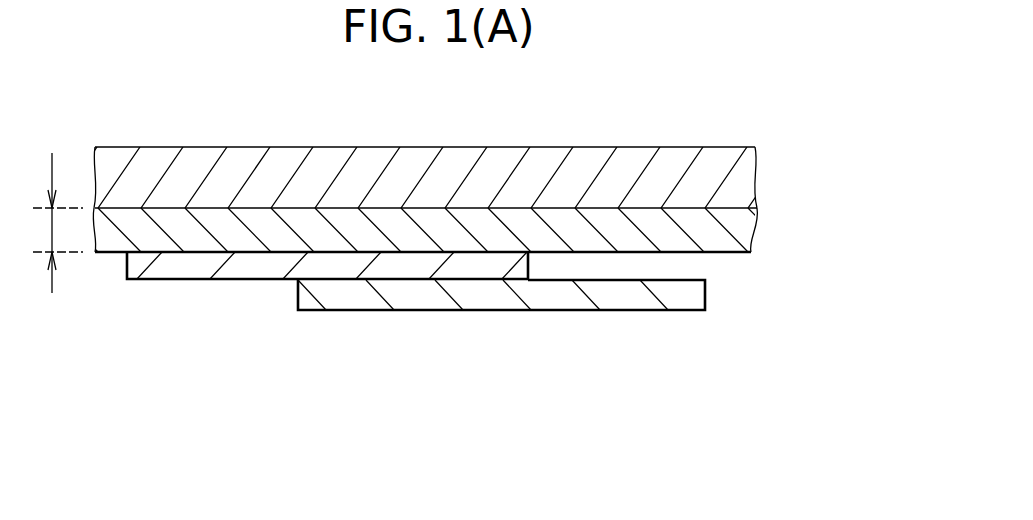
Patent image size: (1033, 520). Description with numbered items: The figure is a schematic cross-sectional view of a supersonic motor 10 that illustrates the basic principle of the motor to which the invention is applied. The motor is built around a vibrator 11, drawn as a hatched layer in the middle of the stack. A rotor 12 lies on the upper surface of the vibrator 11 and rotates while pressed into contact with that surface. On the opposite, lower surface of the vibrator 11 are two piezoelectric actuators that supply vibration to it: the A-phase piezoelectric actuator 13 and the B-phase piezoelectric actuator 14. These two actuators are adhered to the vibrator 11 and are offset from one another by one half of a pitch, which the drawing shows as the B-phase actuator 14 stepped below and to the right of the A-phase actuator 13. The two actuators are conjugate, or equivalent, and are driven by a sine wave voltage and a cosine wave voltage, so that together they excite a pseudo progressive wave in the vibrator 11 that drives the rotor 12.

The supersonic motor 10 is at (336, 107).
The vibrator 11 is at (747, 228).
The rotor 12 is at (738, 178).
The A-phase piezoelectric actuator 13 is at (180, 280).
The B-phase piezoelectric actuator 14 is at (658, 311).